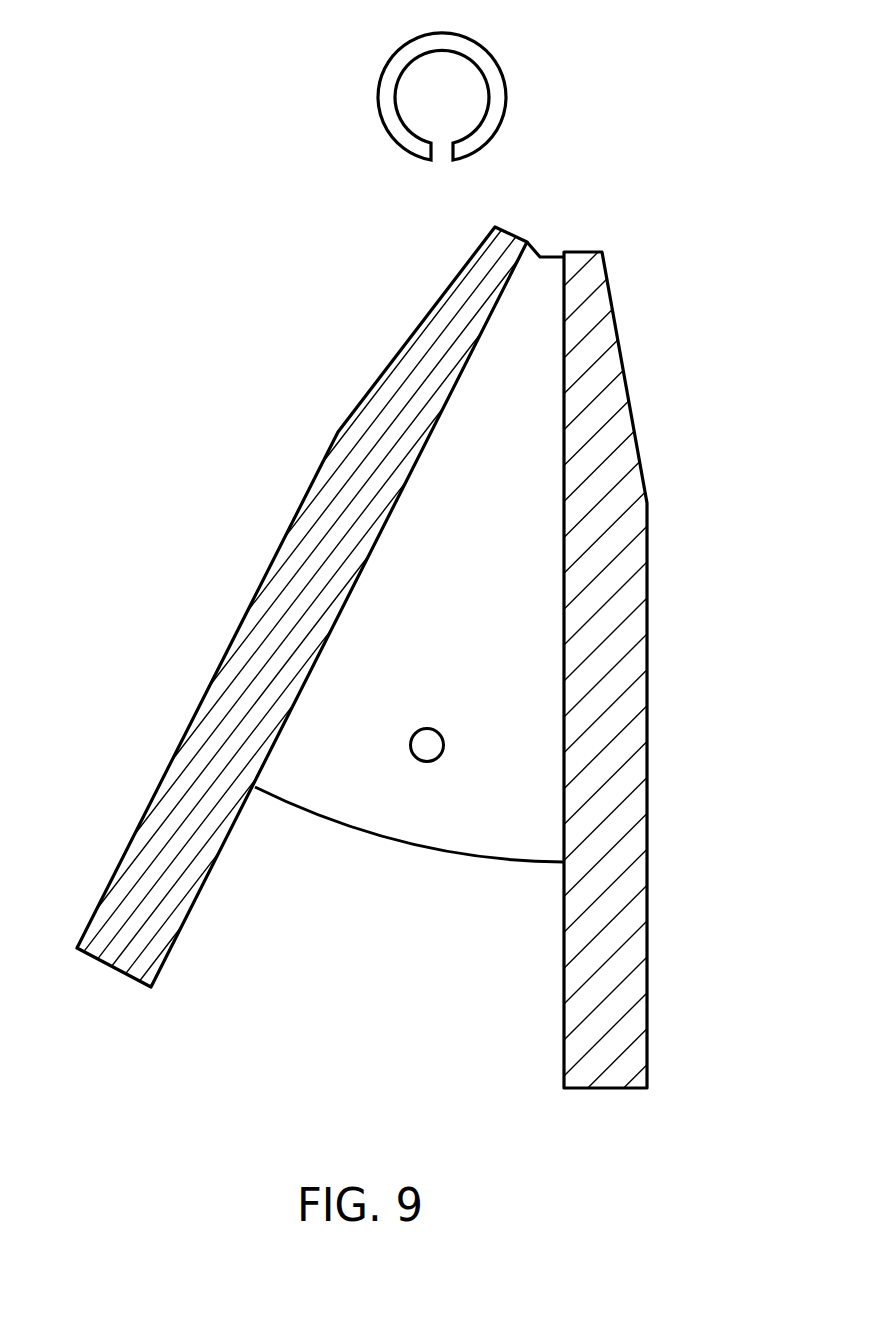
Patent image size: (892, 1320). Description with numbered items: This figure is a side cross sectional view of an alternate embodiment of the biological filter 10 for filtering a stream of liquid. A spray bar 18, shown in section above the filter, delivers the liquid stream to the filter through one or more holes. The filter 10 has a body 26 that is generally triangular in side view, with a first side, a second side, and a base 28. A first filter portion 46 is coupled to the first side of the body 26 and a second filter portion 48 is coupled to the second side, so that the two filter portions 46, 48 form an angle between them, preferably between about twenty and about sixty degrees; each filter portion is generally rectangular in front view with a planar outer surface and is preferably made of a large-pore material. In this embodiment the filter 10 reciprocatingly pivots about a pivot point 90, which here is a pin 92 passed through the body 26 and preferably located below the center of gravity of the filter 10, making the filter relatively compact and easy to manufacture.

The biological filter 10 is at (215, 213).
The spray bar 18 is at (488, 50).
The body 26 is at (550, 658).
The base 28 is at (409, 893).
The first filter portion 46 is at (318, 492).
The second filter portion 48 is at (625, 425).
The pivot point 90 is at (425, 730).
The pin 92 is at (432, 762).